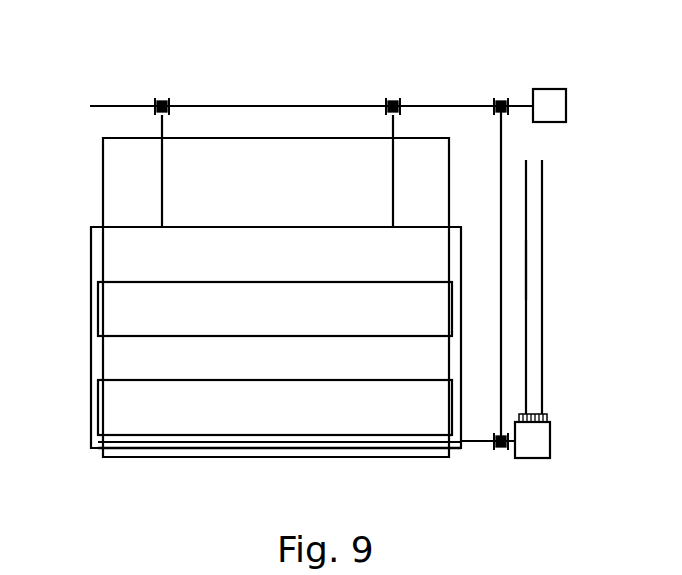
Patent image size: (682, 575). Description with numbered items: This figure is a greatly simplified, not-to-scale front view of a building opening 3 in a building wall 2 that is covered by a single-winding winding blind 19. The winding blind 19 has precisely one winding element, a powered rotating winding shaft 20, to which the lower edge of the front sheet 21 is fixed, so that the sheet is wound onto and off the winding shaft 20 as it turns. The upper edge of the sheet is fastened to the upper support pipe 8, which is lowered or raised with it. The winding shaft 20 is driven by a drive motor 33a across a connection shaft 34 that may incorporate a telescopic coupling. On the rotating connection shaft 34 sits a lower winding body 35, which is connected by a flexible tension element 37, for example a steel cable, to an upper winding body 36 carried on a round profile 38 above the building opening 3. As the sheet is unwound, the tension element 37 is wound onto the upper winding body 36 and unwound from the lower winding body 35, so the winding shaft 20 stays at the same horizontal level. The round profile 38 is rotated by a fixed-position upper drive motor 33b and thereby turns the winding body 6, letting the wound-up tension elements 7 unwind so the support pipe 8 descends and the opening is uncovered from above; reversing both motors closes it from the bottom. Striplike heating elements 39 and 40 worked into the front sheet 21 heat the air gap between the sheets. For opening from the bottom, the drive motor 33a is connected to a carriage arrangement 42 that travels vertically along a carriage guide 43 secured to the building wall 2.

The building wall 2 is at (45, 211).
The building opening 3 is at (103, 183).
The winding body 6 is at (162, 98).
The tension elements 7 is at (163, 120).
The upper support pipe 8 is at (291, 226).
The winding blind 19 is at (554, 211).
The winding shaft 20 is at (326, 448).
The front sheet 21 is at (91, 252).
The drive motor 33a is at (551, 440).
The upper drive motor 33b is at (567, 105).
The connection shaft 34 is at (478, 444).
The lower winding body 35 is at (497, 450).
The upper winding body 36 is at (498, 98).
The tension element 37 is at (503, 333).
The round profile 38 is at (440, 104).
The heating element 39 is at (112, 312).
The heating element 40 is at (112, 415).
The carriage arrangement 42 is at (533, 413).
The carriage guide 43 is at (530, 281).